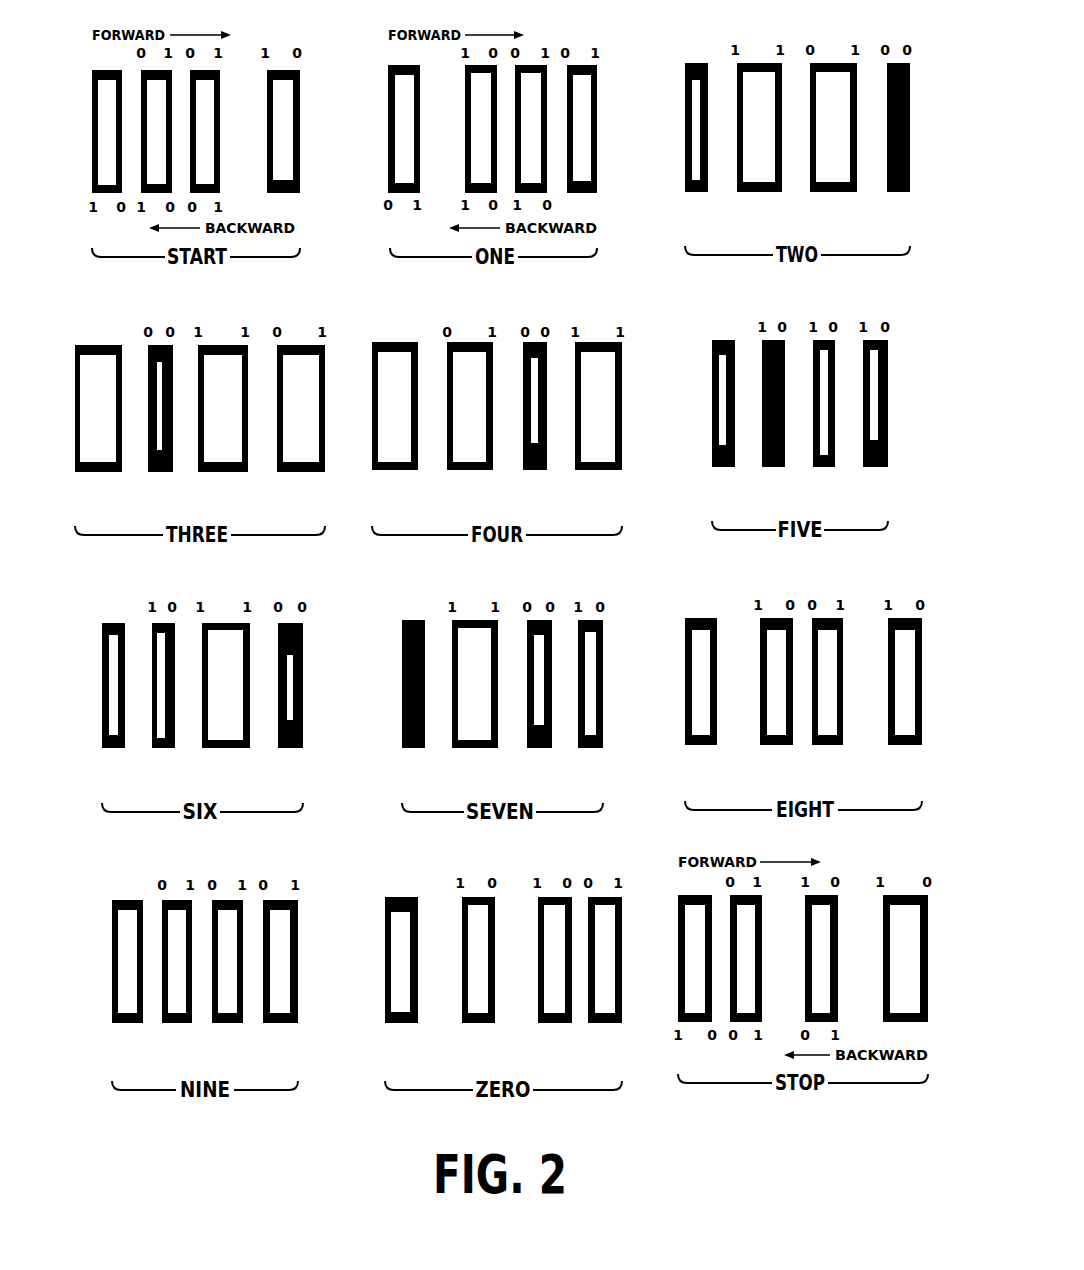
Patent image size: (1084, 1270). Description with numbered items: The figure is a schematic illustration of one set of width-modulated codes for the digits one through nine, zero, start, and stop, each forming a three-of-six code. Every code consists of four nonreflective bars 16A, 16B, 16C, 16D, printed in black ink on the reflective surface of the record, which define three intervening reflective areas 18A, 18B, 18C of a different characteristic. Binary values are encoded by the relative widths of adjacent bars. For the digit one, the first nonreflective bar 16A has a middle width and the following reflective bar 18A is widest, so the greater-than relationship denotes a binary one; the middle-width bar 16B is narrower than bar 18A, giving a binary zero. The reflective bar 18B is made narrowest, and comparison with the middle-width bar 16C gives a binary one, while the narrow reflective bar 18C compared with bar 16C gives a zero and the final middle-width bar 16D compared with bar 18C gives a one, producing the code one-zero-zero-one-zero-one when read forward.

The first nonreflective bar 16A is at (388, 106).
The second nonreflective bar 16B is at (466, 92).
The third nonreflective bar 16C is at (534, 73).
The final nonreflective bar 16D is at (597, 110).
The first reflective bar 18A is at (440, 162).
The second reflective bar 18B is at (507, 80).
The third reflective bar 18C is at (555, 184).